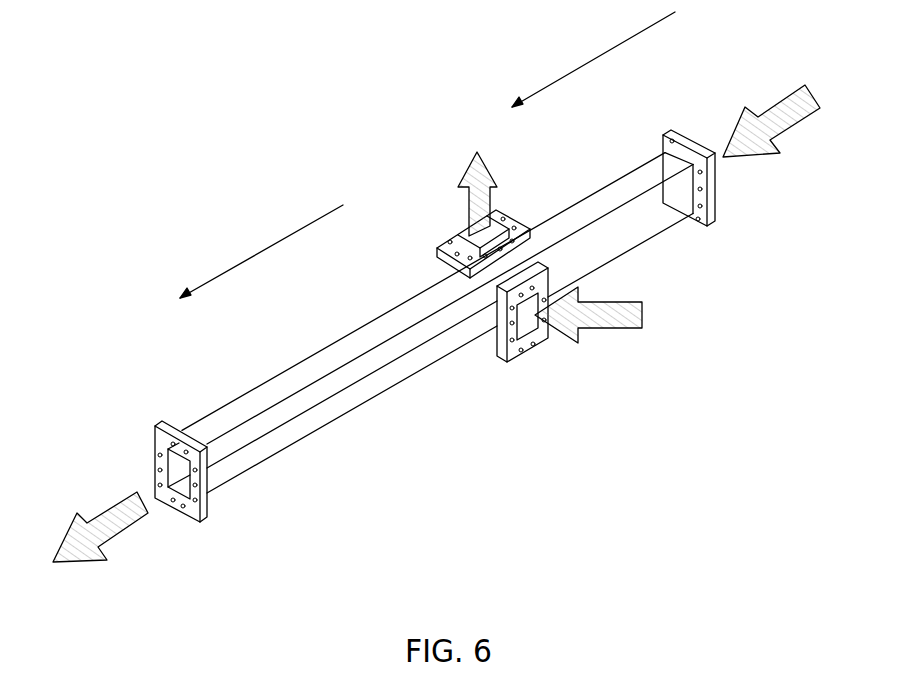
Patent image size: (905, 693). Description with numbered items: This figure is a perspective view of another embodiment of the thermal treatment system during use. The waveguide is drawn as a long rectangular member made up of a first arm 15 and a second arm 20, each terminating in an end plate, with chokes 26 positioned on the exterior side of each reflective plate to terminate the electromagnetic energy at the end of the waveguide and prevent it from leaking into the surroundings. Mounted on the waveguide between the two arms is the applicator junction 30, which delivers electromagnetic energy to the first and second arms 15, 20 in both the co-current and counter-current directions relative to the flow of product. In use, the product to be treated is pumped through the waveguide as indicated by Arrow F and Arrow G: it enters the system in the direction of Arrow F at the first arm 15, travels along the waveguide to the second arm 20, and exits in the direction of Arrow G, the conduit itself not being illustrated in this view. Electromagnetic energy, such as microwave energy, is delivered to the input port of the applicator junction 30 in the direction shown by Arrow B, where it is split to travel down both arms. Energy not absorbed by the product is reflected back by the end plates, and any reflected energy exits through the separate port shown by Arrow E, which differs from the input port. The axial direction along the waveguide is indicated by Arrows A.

The first arm 15 is at (612, 185).
The second arm 20 is at (340, 338).
The chokes 26 is at (192, 507).
The applicator junction 30 is at (513, 350).
The axial direction A is at (427, 155).
The Arrow B is at (604, 315).
The Arrow E is at (483, 180).
The Arrow F is at (783, 111).
The Arrow G is at (88, 541).